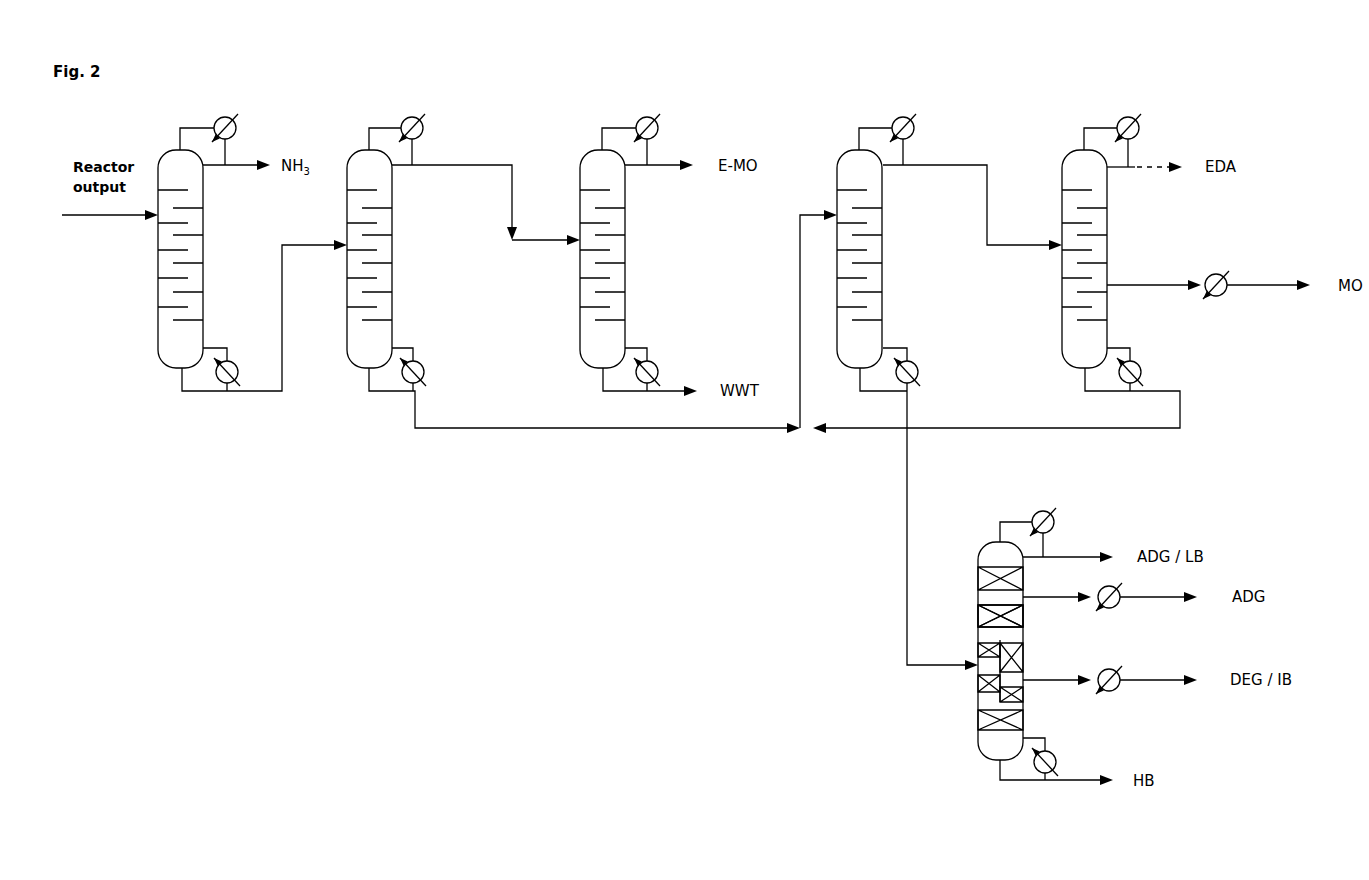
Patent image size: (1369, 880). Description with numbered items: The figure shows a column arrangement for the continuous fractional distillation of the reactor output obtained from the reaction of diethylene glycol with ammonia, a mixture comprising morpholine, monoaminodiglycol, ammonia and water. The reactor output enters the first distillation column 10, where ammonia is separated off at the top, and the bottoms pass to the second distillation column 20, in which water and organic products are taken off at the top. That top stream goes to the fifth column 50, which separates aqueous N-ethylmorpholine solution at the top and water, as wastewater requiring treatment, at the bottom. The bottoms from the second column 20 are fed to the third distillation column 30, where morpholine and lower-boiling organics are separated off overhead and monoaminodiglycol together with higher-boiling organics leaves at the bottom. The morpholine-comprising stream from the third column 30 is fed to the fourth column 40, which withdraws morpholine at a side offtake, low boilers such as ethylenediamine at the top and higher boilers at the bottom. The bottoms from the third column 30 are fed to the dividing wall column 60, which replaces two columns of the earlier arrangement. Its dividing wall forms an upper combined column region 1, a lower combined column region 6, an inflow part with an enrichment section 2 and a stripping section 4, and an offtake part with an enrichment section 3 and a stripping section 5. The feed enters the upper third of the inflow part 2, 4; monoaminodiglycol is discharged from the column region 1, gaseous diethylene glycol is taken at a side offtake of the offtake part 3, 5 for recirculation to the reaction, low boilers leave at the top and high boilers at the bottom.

The first distillation column K10 10 is at (252, 252).
The second distillation column K20 20 is at (573, 273).
The column K50 50 is at (638, 255).
The third distillation column K30 30 is at (949, 392).
The column K40 40 is at (1061, 273).
The dividing wall column K60 60 is at (1078, 646).
The upper combined column region 1 is at (992, 609).
The enrichment section of the inflow part 2 is at (980, 650).
The enrichment section of the offtake part 3 is at (1019, 657).
The stripping section of the inflow part 4 is at (980, 683).
The stripping section of the offtake part 5 is at (1019, 692).
The lower combined column region 6 is at (991, 720).